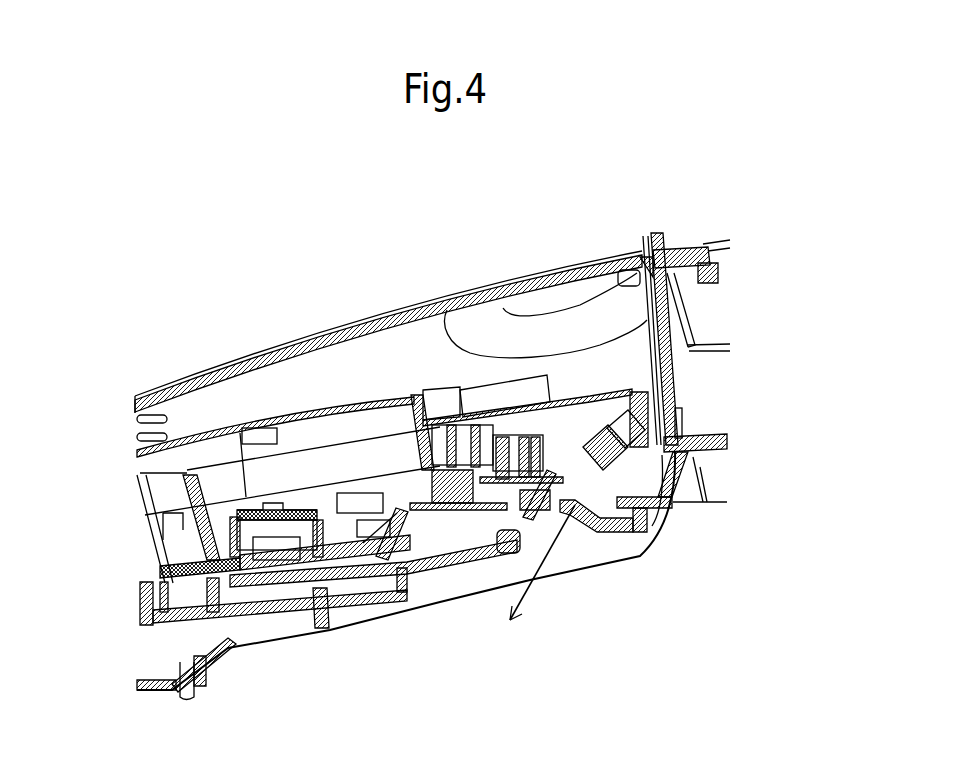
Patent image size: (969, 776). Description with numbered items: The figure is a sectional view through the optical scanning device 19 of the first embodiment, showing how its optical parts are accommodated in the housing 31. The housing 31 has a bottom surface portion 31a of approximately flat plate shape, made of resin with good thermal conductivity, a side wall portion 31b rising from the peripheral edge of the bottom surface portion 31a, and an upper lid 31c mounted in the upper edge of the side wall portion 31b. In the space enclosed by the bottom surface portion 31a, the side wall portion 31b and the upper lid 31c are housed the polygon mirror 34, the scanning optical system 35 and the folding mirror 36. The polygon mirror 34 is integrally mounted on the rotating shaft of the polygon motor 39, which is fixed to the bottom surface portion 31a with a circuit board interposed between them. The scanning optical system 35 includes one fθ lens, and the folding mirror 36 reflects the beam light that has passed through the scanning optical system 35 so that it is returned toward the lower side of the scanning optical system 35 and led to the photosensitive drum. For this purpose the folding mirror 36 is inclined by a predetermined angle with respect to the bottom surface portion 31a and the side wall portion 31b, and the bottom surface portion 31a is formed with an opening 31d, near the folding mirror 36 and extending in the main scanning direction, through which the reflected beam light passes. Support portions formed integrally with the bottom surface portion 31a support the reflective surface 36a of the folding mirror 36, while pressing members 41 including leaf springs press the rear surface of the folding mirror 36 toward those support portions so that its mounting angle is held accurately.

The optical scanning device 19 is at (705, 205).
The housing 31 is at (663, 538).
The bottom surface portion 31a is at (340, 583).
The side wall portion 31b is at (670, 395).
The upper lid 31c is at (474, 290).
The opening 31d is at (566, 515).
The polygon mirror 34 is at (300, 548).
The scanning optical system 35 is at (415, 465).
The folding mirror 36 is at (686, 480).
The reflective surface 36a is at (615, 523).
The polygon motor 39 is at (245, 568).
The pressing member 41 is at (682, 420).